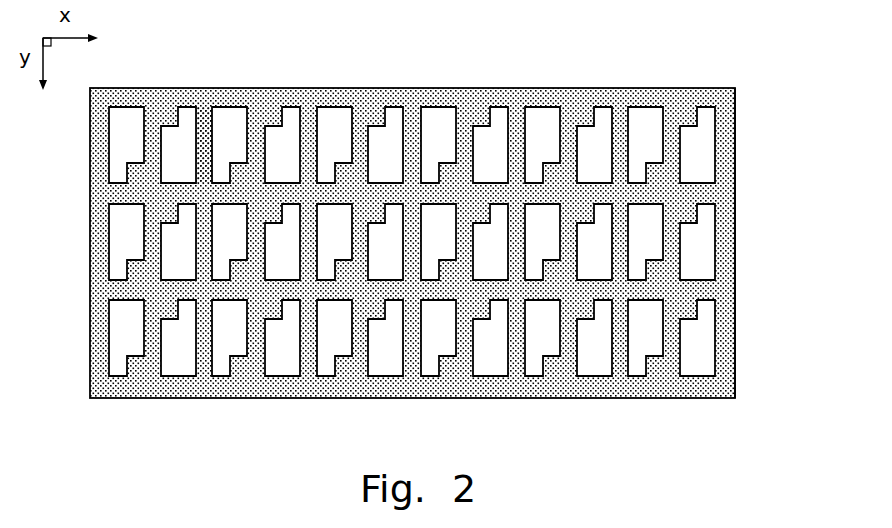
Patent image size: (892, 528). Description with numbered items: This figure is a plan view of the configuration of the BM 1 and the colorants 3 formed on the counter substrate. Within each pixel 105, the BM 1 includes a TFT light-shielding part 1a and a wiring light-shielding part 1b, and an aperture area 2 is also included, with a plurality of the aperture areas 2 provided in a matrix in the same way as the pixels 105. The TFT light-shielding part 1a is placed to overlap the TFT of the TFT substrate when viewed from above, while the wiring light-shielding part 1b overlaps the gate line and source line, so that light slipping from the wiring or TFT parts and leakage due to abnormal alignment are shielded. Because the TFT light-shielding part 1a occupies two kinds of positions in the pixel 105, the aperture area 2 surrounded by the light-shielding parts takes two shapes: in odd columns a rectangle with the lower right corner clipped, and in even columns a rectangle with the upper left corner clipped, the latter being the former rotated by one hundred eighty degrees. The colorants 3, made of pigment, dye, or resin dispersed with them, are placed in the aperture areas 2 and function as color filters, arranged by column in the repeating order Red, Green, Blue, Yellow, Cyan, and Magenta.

The BM 1 is at (455, 199).
The TFT light-shielding part 1a is at (169, 108).
The wiring light-shielding part 1b is at (203, 122).
The aperture area 2 is at (722, 126).
The colorant 3 is at (711, 177).
The pixel 105 is at (727, 236).